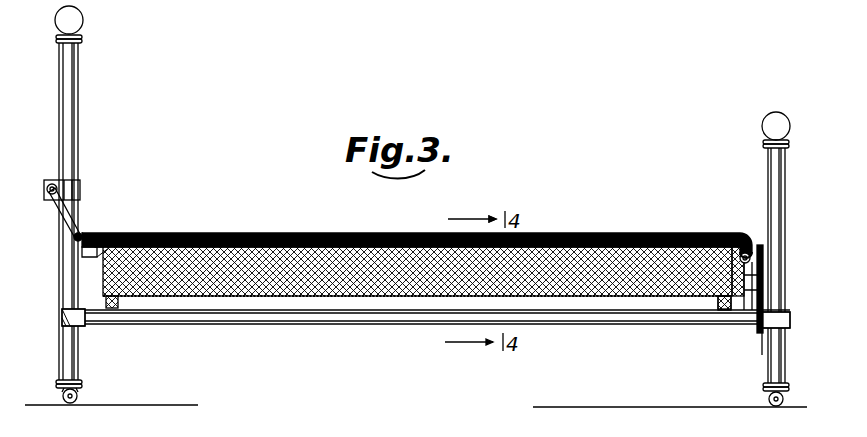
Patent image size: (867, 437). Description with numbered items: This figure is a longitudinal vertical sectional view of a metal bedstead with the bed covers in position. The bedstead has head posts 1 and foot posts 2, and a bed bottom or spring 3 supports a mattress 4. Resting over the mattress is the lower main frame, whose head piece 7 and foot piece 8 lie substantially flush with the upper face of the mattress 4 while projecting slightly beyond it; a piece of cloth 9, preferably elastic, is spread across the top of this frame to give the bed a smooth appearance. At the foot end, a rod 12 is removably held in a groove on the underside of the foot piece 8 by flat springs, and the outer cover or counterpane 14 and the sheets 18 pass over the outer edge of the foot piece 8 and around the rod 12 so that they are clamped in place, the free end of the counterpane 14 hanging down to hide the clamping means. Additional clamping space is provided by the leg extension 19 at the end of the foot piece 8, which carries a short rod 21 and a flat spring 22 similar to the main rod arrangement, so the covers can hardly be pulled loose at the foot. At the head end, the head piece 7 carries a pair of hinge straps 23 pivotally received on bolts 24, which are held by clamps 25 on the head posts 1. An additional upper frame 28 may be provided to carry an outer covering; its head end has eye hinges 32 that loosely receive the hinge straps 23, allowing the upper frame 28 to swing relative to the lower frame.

The head post 1 is at (77, 106).
The foot post 2 is at (768, 160).
The bed bottom or spring 3 is at (218, 298).
The mattress 4 is at (278, 294).
The head piece 7 is at (98, 240).
The foot piece 8 is at (727, 238).
The piece of cloth 9 is at (605, 234).
The rod 12 is at (762, 245).
The outer cover or counterpane 14 is at (560, 234).
The sheets 18 is at (657, 235).
The leg extension 19 is at (765, 272).
The short rod 21 is at (748, 300).
The flat spring 22 is at (722, 303).
The hinge strap 23 is at (64, 204).
The bolt 24 is at (58, 185).
The clamp 25 is at (81, 188).
The upper frame 28 is at (750, 238).
The eye hinge 32 is at (74, 242).